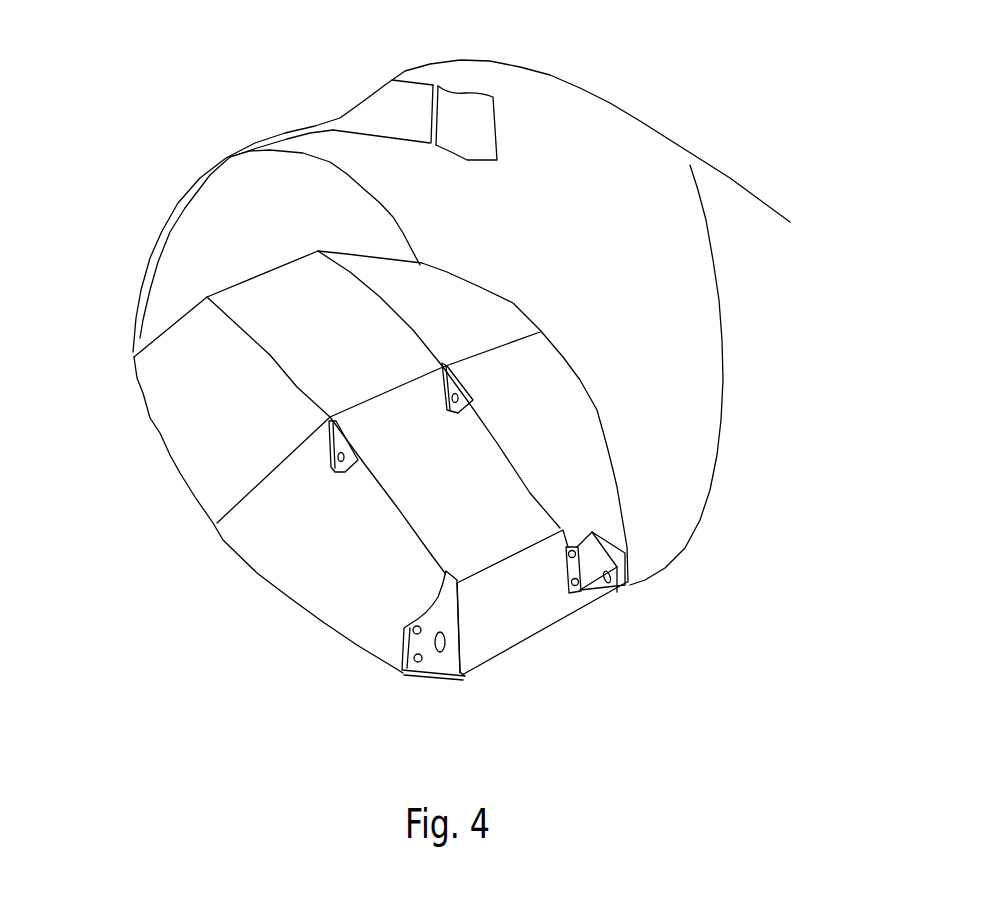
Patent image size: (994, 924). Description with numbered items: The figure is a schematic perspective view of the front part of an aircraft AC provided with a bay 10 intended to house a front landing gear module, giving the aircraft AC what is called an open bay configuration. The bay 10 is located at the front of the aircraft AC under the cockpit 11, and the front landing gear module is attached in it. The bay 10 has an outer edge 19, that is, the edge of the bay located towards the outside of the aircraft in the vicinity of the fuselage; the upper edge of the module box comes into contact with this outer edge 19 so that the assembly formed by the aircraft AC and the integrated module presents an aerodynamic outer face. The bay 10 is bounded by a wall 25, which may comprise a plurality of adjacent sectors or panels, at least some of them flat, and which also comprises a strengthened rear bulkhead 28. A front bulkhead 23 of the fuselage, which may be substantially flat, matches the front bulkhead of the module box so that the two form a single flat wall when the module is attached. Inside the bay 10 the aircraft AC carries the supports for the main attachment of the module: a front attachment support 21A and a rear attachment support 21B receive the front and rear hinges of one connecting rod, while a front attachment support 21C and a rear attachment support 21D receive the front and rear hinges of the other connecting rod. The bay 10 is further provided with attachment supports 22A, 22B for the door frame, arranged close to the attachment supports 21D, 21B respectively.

The aircraft AC is at (664, 137).
The cockpit 11 is at (366, 102).
The front bulkhead 23 is at (178, 240).
The outer edge 19 is at (163, 333).
The bay 10 is at (224, 438).
The wall 25 is at (584, 491).
The front attachment support 21A is at (468, 378).
The front attachment support 21C is at (323, 460).
The strengthened rear bulkhead 28 is at (520, 618).
The rear attachment support 21B is at (623, 588).
The attachment support 22B is at (573, 605).
The rear attachment support 21D is at (460, 657).
The attachment support 22A is at (402, 677).